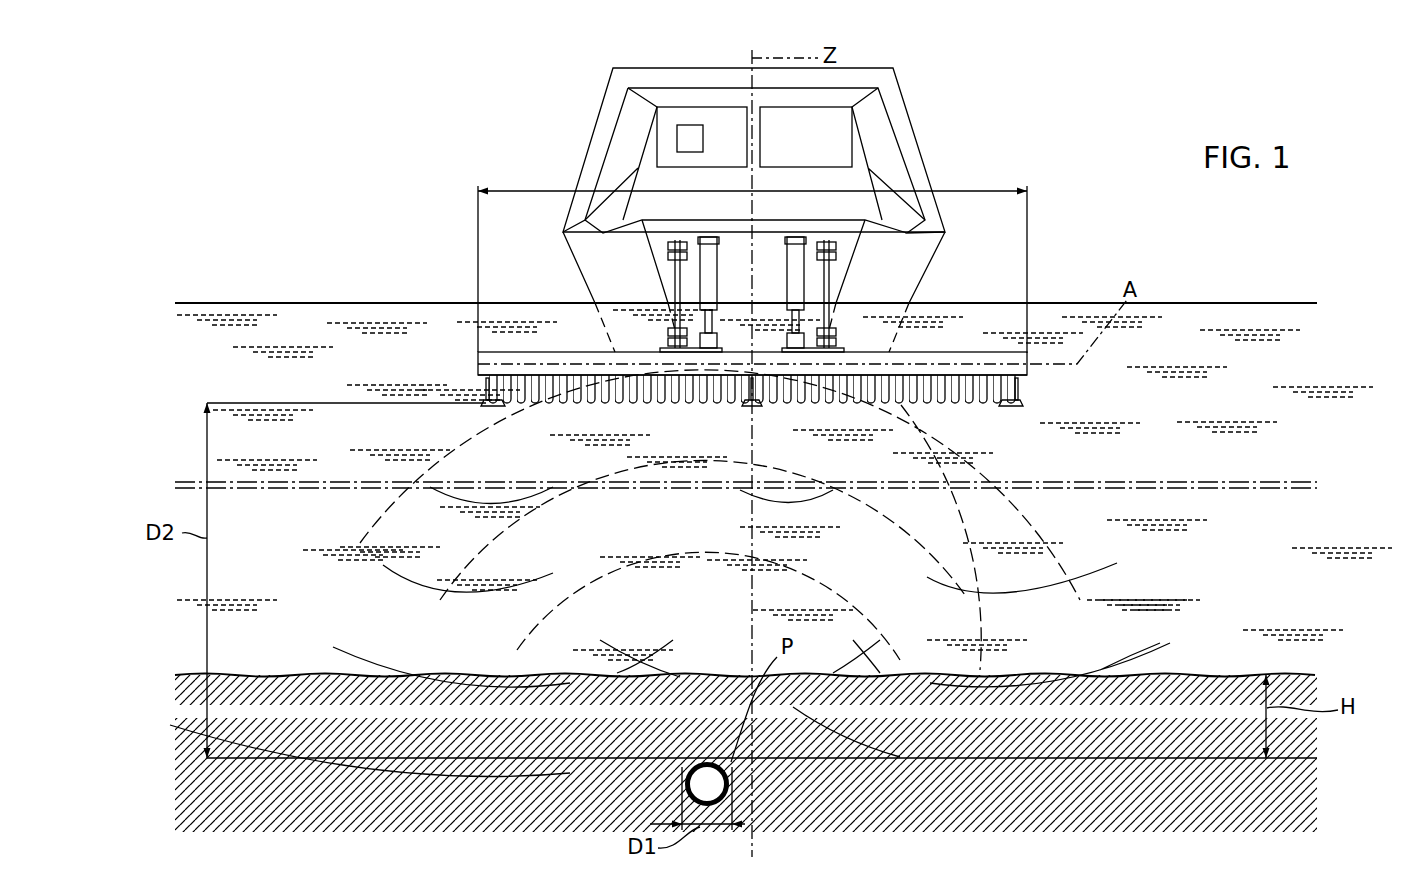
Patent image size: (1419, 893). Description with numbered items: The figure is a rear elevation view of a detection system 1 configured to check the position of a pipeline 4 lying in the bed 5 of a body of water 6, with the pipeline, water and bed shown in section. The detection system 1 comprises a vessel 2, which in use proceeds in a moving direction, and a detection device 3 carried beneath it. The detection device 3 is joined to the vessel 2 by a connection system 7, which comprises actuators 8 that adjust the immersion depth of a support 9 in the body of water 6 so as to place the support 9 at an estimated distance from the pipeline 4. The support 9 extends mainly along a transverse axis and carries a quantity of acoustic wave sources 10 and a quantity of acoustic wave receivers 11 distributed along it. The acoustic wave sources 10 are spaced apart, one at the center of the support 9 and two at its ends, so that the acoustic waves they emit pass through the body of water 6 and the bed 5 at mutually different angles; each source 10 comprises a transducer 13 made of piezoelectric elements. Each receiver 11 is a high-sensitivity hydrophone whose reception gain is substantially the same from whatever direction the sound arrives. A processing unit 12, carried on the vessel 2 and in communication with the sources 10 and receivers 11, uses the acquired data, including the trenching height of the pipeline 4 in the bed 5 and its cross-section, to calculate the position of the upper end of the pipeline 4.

The detection system 1 is at (490, 132).
The vessel 2 is at (898, 120).
The detection device 3 is at (1012, 358).
The pipeline 4 is at (728, 797).
The bed of the body of water 5 is at (1283, 782).
The body of water 6 is at (1187, 545).
The connection system 7 is at (660, 338).
The actuators 8 is at (707, 280).
The support 9 is at (957, 355).
The acoustic wave sources 10 is at (497, 404).
The acoustic wave receivers 11 is at (580, 383).
The processing unit 12 is at (683, 137).
The transducer 13 is at (488, 396).